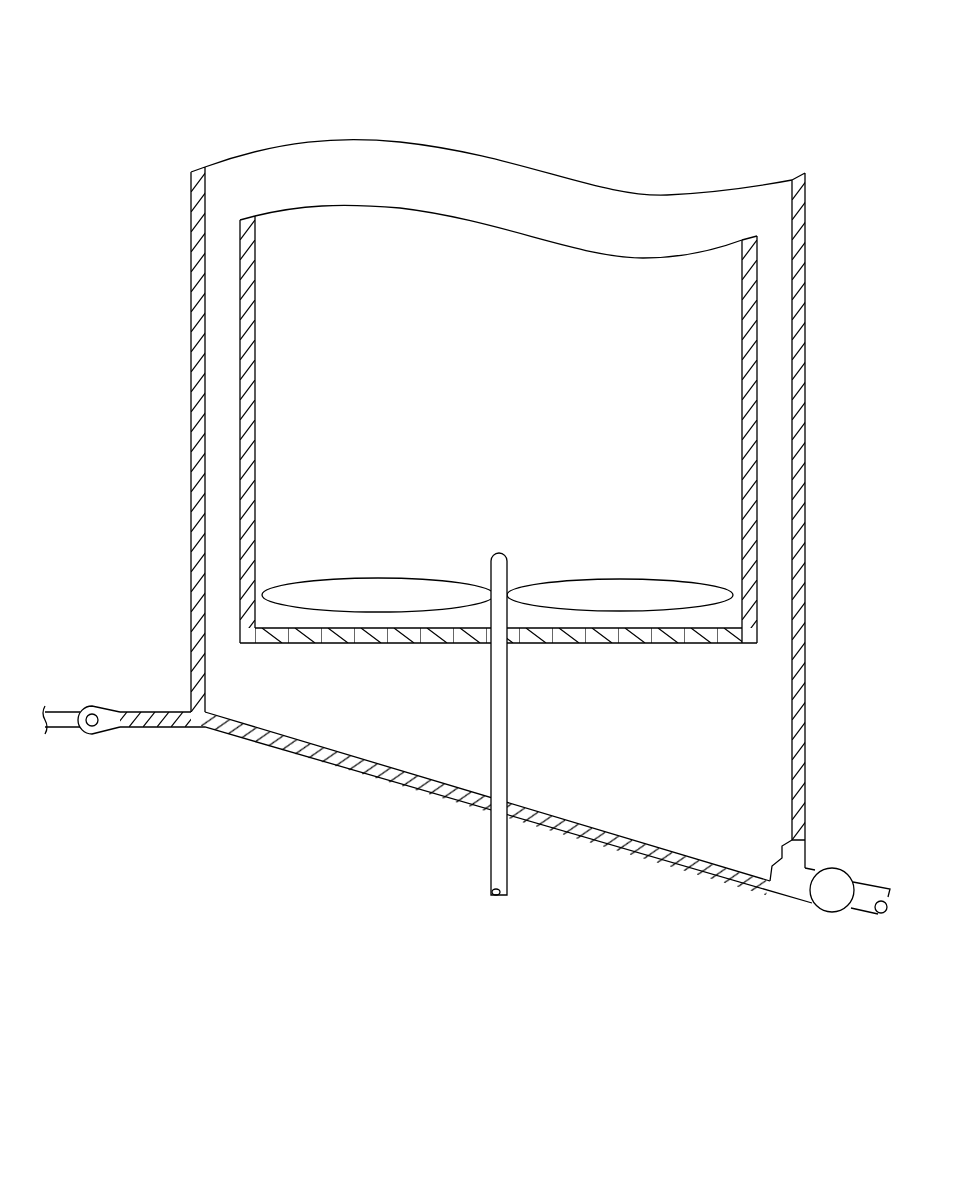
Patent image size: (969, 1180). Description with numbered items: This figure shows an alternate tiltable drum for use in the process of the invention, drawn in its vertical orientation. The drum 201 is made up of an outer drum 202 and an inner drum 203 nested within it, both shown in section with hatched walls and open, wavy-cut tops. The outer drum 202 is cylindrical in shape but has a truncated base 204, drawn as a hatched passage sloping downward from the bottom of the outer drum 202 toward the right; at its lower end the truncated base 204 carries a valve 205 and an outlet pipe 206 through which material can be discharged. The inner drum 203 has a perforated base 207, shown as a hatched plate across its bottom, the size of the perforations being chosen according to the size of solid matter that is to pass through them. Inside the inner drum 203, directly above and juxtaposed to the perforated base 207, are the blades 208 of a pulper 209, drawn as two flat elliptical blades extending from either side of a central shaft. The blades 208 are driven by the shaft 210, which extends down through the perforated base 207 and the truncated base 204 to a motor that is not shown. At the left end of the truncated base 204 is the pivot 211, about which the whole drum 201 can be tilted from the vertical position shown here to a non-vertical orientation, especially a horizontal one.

The drum 201 is at (216, 116).
The outer drum 202 is at (191, 437).
The inner drum 203 is at (255, 360).
The truncated base 204 is at (381, 783).
The valve 205 is at (810, 900).
The outlet pipe 206 is at (872, 914).
The perforated base 207 is at (371, 651).
The blades 208 is at (421, 578).
The pulper 209 is at (502, 545).
The shaft 210 is at (507, 872).
The pivot 211 is at (94, 736).